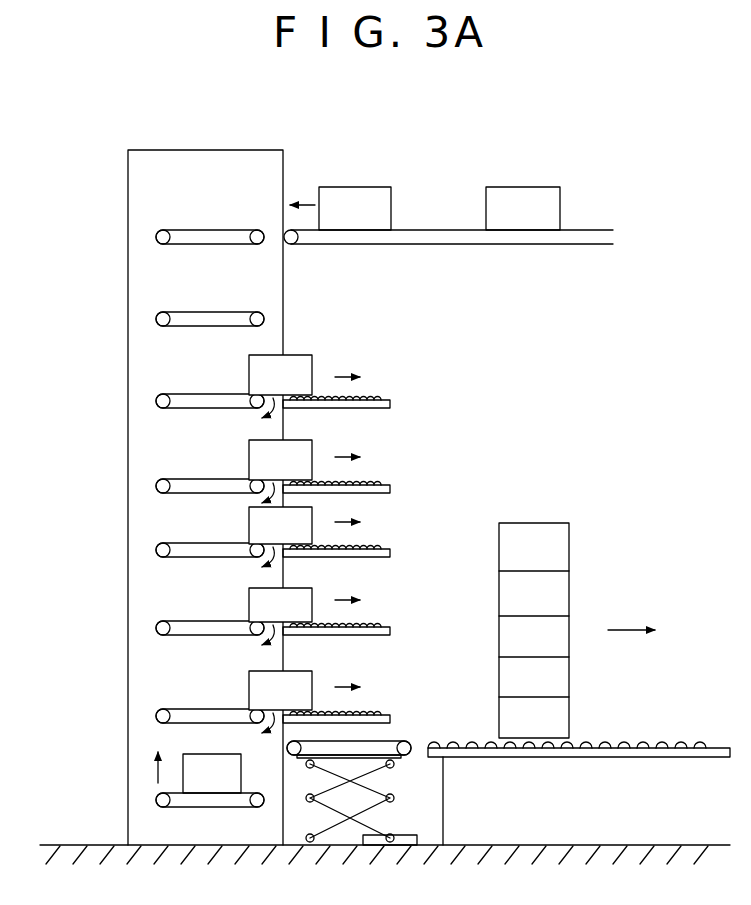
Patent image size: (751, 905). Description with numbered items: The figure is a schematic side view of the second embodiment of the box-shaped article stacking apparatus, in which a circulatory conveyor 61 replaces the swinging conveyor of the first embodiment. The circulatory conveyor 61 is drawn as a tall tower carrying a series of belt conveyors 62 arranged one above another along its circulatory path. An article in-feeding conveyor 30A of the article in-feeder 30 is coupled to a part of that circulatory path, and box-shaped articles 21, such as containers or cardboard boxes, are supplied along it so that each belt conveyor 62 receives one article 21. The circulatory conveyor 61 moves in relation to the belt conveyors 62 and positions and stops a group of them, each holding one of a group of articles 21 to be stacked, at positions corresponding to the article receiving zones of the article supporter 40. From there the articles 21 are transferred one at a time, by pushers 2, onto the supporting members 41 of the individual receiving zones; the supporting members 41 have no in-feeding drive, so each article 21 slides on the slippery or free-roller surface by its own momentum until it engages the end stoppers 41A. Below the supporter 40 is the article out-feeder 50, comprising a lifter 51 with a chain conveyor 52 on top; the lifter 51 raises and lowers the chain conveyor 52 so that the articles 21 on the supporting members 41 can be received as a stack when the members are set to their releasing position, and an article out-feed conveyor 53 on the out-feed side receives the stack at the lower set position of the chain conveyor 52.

The pusher 2 is at (304, 358).
The box-shaped article 21 is at (527, 187).
The article in-feeder 30 is at (463, 217).
The article in-feeding conveyor 30A is at (596, 245).
The article supporter 40 is at (382, 528).
The supporting members 41 is at (382, 560).
The end stoppers 41A is at (391, 403).
The article out-feeder 50 is at (573, 757).
The lifter 51 is at (386, 760).
The chain conveyor 52 is at (400, 742).
The article out-feed conveyor 53 is at (700, 741).
The circulatory conveyor 61 is at (126, 156).
The belt conveyor 62 is at (227, 230).